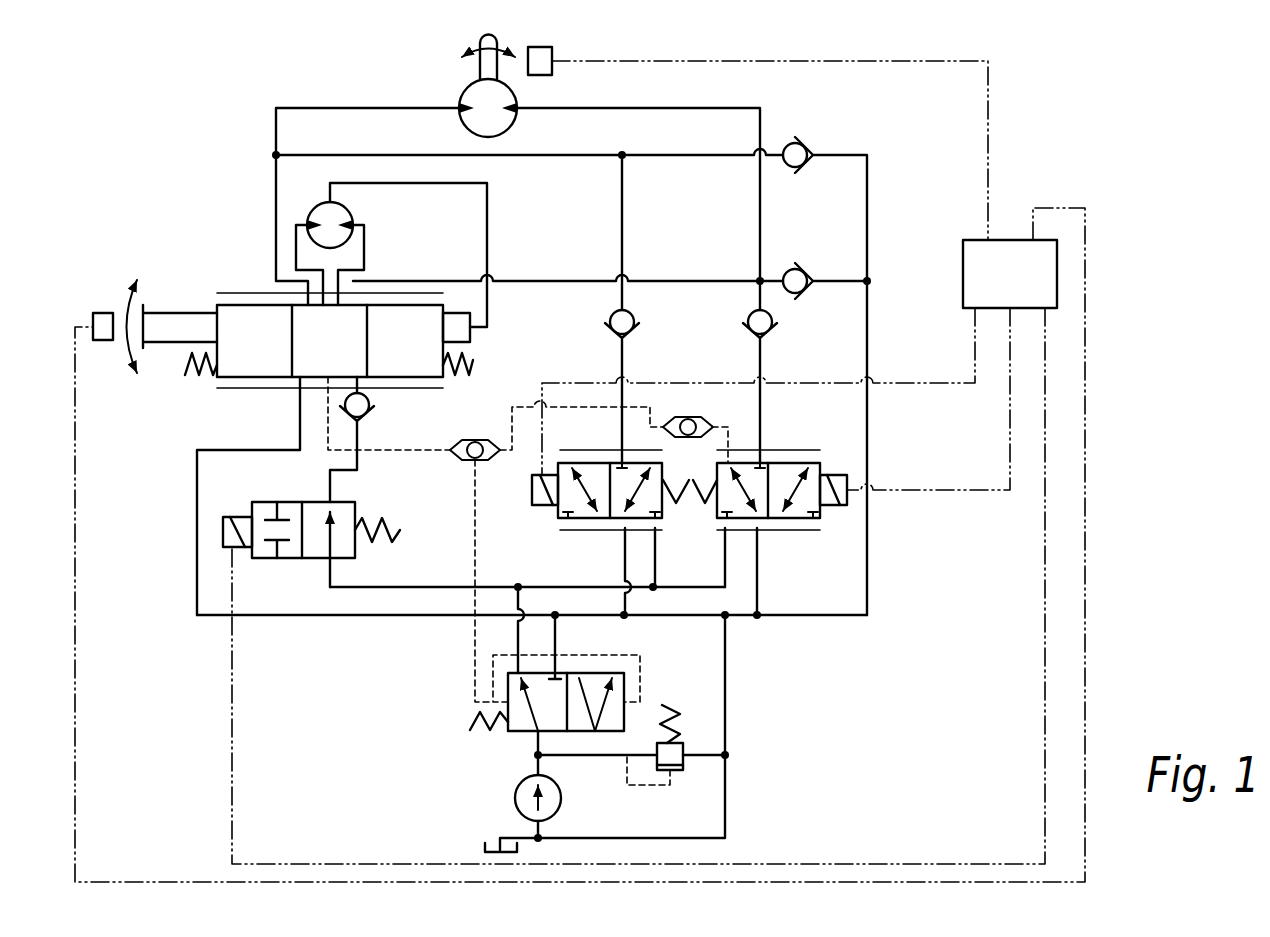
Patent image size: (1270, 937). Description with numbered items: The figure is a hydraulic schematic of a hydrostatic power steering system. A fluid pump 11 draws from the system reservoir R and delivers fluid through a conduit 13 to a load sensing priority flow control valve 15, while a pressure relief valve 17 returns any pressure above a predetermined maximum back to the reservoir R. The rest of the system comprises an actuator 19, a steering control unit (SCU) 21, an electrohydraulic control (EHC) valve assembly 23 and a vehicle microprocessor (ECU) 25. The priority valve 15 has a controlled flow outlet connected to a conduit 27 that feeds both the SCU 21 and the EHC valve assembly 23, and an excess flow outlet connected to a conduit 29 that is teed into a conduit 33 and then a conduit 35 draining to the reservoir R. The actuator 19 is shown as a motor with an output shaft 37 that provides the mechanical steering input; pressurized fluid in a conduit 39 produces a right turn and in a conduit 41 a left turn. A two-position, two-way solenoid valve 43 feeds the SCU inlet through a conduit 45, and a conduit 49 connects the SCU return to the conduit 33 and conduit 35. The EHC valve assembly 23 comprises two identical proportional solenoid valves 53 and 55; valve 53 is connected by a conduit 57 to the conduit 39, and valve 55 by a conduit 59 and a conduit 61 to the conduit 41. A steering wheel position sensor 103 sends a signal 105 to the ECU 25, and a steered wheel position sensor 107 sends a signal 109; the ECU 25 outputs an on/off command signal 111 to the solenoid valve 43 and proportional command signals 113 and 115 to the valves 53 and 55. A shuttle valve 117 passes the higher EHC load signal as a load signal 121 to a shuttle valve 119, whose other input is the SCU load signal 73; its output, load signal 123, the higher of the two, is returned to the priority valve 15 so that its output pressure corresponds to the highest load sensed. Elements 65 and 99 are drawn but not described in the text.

The fluid pump 11 is at (520, 780).
The conduit 13 is at (537, 740).
The load sensing priority flow control valve 15 is at (435, 688).
The pressure relief valve 17 is at (686, 780).
The actuator 19 is at (457, 90).
The steering control unit (SCU) 21 is at (221, 268).
The electrohydraulic control (EHC) valve assembly 23 is at (809, 543).
The vehicle microprocessor (ECU) 25 is at (1008, 236).
The conduit 27 is at (518, 640).
The conduit 29 is at (556, 655).
The conduit 33 is at (803, 618).
The conduit 35 is at (727, 678).
The output shaft 37 is at (478, 36).
The conduit 39 is at (640, 108).
The conduit 41 is at (333, 108).
The solenoid valve 43 is at (295, 572).
The conduit 45 is at (362, 435).
The conduit 49 is at (302, 420).
The proportional solenoid (EHC) valve 53 is at (798, 462).
The proportional solenoid (EHC) valve 55 is at (585, 541).
The conduit 57 is at (760, 418).
The conduit 59 is at (623, 295).
The conduit 61 is at (535, 155).
The hydraulic motor 65 is at (350, 203).
The load signal 73 is at (422, 452).
The conduit 99 is at (413, 185).
The steering wheel position sensor 103 is at (100, 313).
The signal 105 is at (1085, 650).
The steered wheel position sensor 107 is at (540, 47).
The signal 109 is at (795, 62).
The on/off command signal 111 is at (1040, 740).
The proportional command signal 113 is at (985, 490).
The proportional command signal 115 is at (945, 383).
The shuttle valve 117 is at (697, 418).
The shuttle valve 119 is at (468, 442).
The load signal 121 is at (527, 405).
The load signal 123 is at (475, 535).
The system reservoir R is at (483, 850).